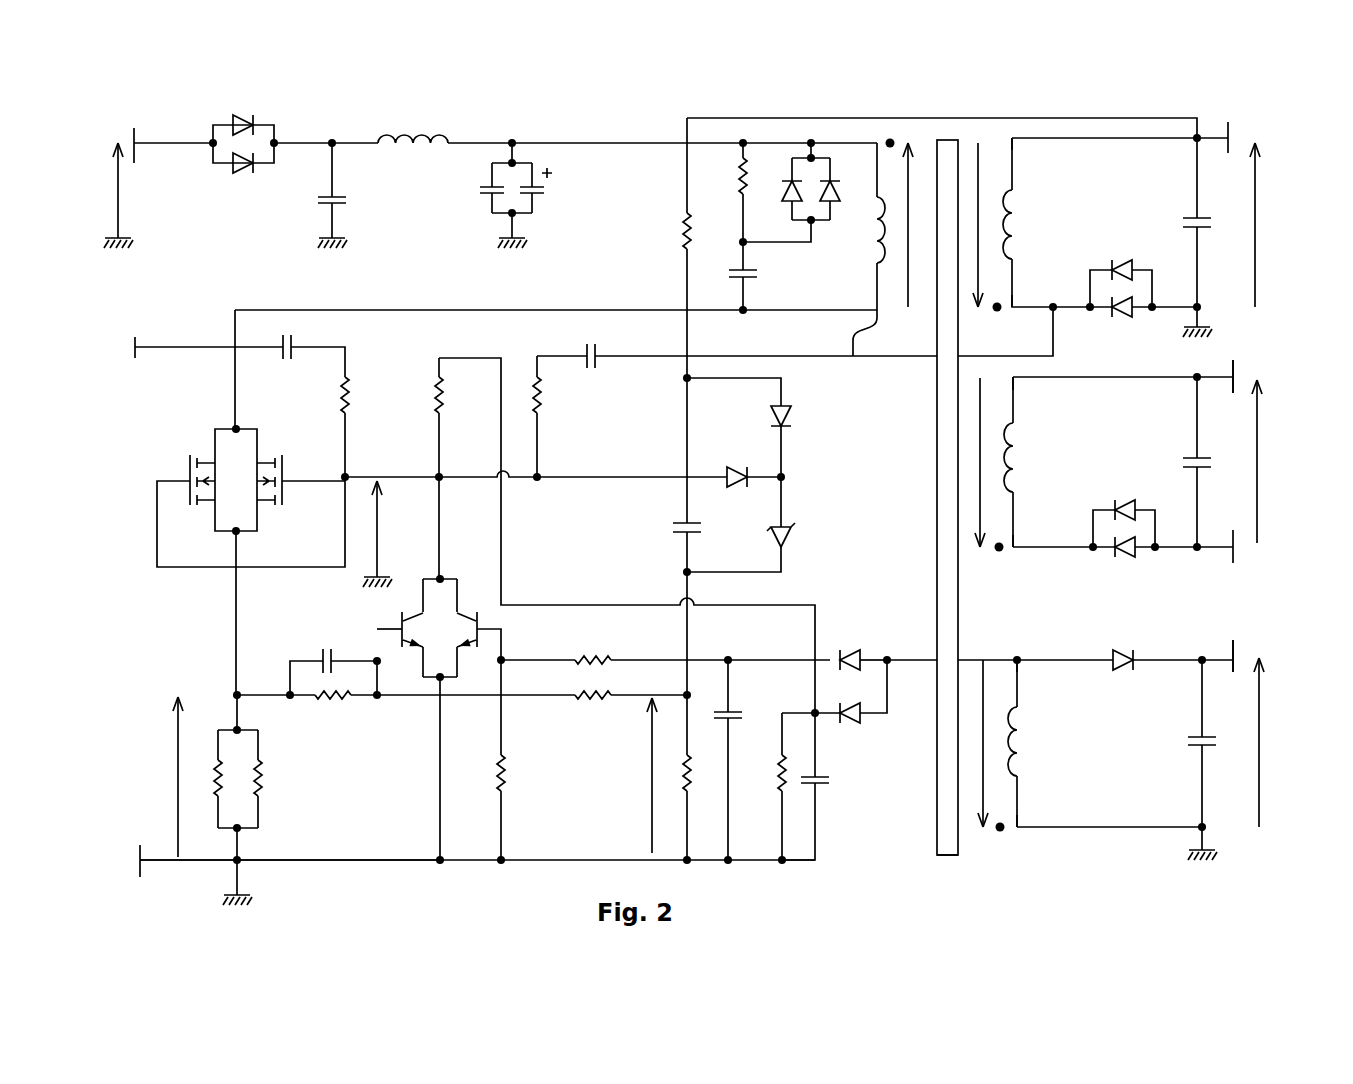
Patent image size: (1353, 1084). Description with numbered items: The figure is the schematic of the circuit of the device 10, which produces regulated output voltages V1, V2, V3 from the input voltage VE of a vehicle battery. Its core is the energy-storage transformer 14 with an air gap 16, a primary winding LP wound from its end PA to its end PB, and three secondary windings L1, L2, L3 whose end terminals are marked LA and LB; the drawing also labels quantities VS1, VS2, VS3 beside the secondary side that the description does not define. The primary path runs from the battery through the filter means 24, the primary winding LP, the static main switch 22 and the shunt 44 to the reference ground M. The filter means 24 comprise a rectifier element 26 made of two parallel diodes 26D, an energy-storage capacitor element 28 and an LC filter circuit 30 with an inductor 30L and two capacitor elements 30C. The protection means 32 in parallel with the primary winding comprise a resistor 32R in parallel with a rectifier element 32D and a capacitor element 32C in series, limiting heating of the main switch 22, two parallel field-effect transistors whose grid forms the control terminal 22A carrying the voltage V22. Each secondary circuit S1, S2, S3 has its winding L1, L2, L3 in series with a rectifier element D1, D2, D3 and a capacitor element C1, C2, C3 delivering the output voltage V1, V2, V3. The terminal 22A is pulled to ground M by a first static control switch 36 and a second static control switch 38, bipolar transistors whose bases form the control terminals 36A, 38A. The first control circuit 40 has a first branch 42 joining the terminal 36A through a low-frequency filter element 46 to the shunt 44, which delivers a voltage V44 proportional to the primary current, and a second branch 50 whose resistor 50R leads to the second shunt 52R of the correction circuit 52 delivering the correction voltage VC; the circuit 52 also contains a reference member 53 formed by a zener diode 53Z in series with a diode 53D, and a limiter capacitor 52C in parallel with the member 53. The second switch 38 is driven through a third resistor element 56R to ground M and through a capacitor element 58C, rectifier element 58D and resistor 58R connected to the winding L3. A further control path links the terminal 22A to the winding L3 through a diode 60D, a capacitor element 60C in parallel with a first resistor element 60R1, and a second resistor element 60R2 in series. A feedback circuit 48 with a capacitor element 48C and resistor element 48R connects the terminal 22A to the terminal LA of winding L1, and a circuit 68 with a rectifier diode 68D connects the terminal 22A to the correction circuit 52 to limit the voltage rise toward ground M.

The device 10 is at (345, 870).
The energy-storage transformer 14 is at (795, 508).
The air gap 16 is at (948, 860).
The static main switch 22 is at (155, 464).
The control terminal 22A is at (342, 477).
The filter means 24 is at (338, 118).
The rectifier element 26 is at (227, 148).
The diodes 26D is at (246, 118).
The energy-storage capacitor element 28 is at (546, 192).
The LC type filter circuit 30 is at (462, 186).
The inductor 30L is at (425, 130).
The capacitor elements 30C is at (346, 200).
The switching assistance circuit 32 is at (911, 466).
The resistor 32R is at (735, 193).
The rectifier element 32D is at (781, 183).
The capacitor element 32C is at (760, 275).
The first static control switch 36 is at (413, 612).
The voltage control terminal 36A is at (377, 662).
The second static control switch 38 is at (480, 662).
The voltage control terminal 38A is at (507, 657).
The first control circuit 40 is at (333, 712).
The first branch 42 is at (267, 687).
The shunt 44 is at (208, 832).
The low frequency filter element 46 is at (290, 663).
The feedback circuit 48 is at (695, 410).
The resistor element 48R is at (540, 408).
The capacitor element 48C is at (597, 374).
The second branch 50 is at (521, 727).
The resistor 50R is at (590, 703).
The correction voltage generator circuit 52 is at (687, 716).
The second shunt 52R is at (700, 787).
The limiter member 52C is at (683, 523).
The reference member 53 is at (793, 475).
The diode 53D is at (790, 413).
The zener diode 53Z is at (795, 533).
The third resistor element 56R is at (510, 781).
The resistor 58R is at (590, 652).
The capacitor element 58C is at (737, 715).
The rectifier element 58D is at (860, 658).
The diode 60D is at (877, 717).
The capacitor element 60C is at (828, 782).
The first resistor element 60R1 is at (780, 783).
The second resistor element 60R2 is at (433, 393).
The circuit 68 is at (565, 480).
The rectifier diode 68D is at (740, 470).
The input voltage VE is at (118, 203).
The correction voltage VC is at (647, 733).
The voltage at control terminal V22 is at (377, 517).
The shunt voltage V44 is at (173, 777).
The primary winding LP is at (880, 203).
The primary winding end PA is at (880, 125).
The primary winding end PB is at (795, 353).
The end terminal LA is at (1012, 310).
The end terminal LB is at (1012, 123).
The secondary winding L1 is at (1012, 203).
The secondary winding L2 is at (1013, 490).
The secondary winding L3 is at (1020, 750).
The rectifier element D1 is at (1113, 253).
The rectifier element D2 is at (1117, 495).
The rectifier element D3 is at (1123, 677).
The capacitor element C1 is at (1185, 220).
The capacitor element C2 is at (1185, 467).
The capacitor element C3 is at (1185, 743).
The secondary circuit S1 is at (1245, 140).
The secondary circuit S2 is at (1240, 373).
The secondary circuit S3 is at (1247, 650).
The regulated output voltage V1 is at (1258, 183).
The regulated output voltage V2 is at (1258, 422).
The regulated output voltage V3 is at (1260, 700).
The secondary voltage VS1 is at (980, 153).
The secondary voltage VS2 is at (978, 385).
The secondary voltage VS3 is at (983, 692).
The reference ground M is at (367, 862).